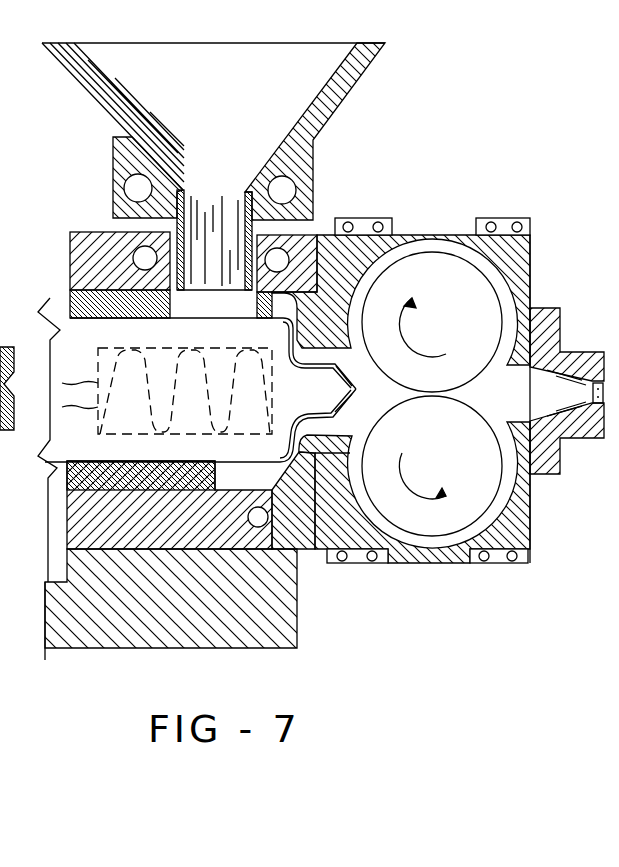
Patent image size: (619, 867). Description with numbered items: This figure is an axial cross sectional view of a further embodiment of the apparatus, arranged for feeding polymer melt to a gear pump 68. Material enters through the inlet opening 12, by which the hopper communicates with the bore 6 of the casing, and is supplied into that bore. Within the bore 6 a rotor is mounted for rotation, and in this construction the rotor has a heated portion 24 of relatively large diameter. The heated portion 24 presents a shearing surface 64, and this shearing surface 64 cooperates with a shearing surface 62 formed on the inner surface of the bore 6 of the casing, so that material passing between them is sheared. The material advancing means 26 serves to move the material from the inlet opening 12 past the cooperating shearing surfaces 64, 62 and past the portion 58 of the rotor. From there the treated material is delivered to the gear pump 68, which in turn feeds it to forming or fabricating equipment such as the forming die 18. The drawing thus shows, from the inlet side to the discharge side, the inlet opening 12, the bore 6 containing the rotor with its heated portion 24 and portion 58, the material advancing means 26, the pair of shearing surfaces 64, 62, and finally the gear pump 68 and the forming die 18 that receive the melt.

The bore 6 is at (233, 481).
The inlet opening 12 is at (210, 305).
The forming die 18 is at (558, 324).
The heated portion 24 is at (70, 447).
The material advancing means 26 is at (50, 298).
The portion of the rotor 58 is at (328, 410).
The shearing surface 62 is at (289, 366).
The shearing surface 64 is at (290, 349).
The gear pump 68 is at (477, 317).